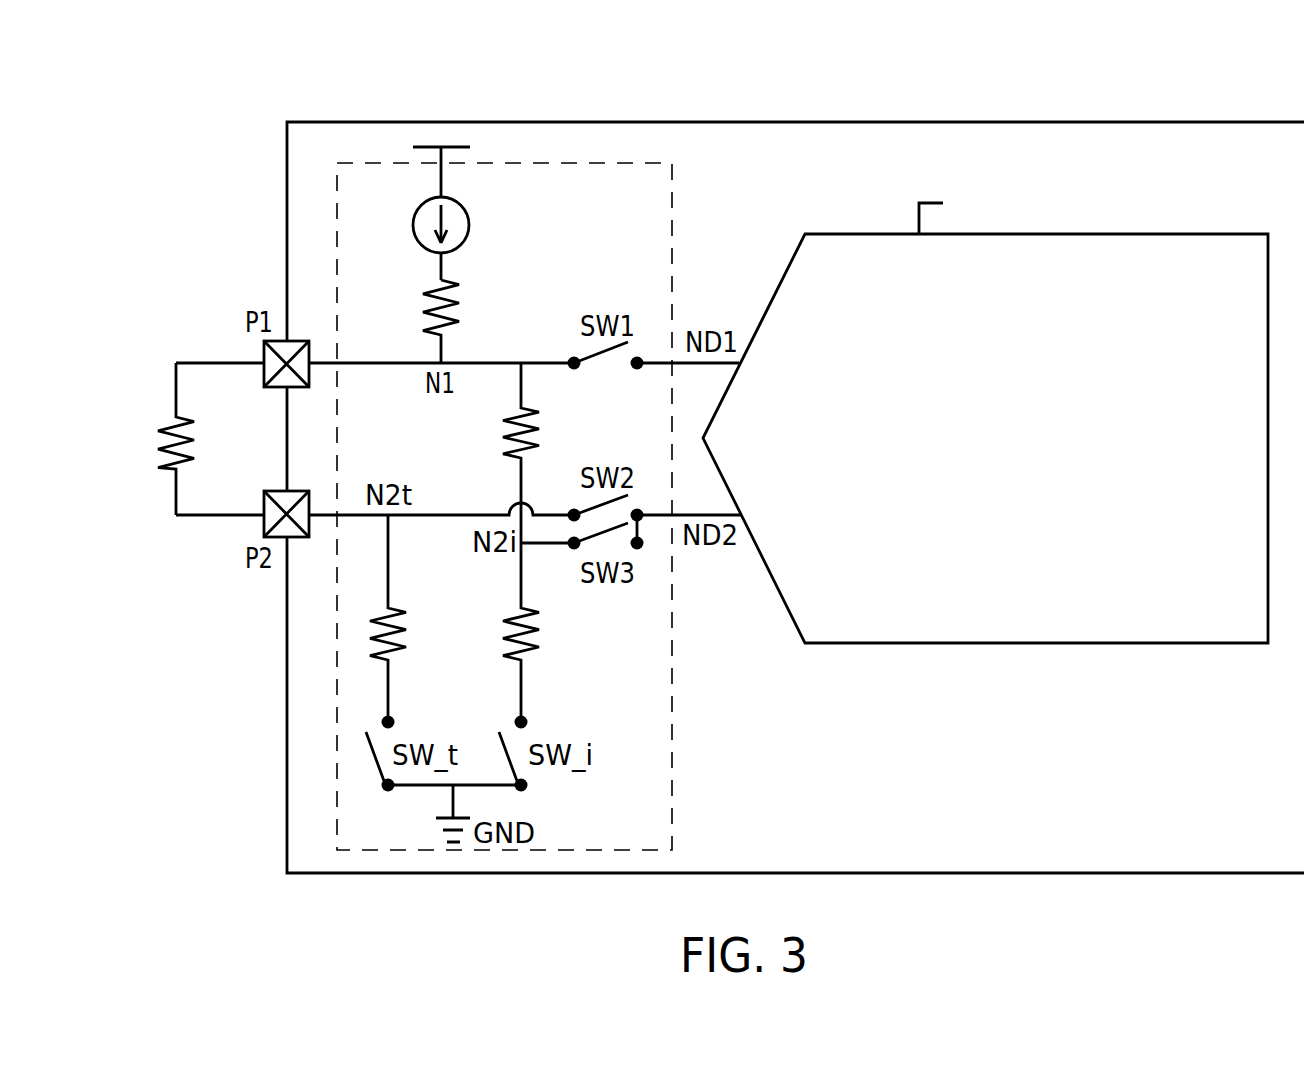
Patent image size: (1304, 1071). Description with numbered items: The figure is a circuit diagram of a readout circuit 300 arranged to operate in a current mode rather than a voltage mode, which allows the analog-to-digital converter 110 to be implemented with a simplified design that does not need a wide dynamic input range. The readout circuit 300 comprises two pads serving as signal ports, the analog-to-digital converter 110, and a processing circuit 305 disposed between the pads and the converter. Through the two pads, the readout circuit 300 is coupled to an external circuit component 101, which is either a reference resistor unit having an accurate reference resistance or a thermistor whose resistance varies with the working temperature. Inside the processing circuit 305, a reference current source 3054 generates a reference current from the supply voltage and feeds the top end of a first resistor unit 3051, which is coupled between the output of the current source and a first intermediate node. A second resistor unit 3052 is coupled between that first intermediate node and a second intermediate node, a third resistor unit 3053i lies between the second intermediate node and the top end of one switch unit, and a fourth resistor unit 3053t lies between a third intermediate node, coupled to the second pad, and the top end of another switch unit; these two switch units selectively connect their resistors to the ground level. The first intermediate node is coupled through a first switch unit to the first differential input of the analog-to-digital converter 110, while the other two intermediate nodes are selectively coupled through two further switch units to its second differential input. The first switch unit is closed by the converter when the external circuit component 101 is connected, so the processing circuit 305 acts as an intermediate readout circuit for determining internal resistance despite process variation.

The readout circuit 300 is at (776, 122).
The processing circuit 305 is at (672, 773).
The ADC 110 is at (1027, 643).
The external circuit component 101 is at (150, 456).
The reference current source 3054 is at (413, 218).
The resistor unit 3051 is at (420, 298).
The resistor unit 3052 is at (500, 440).
The resistor unit 3053t is at (398, 616).
The resistor unit 3053i is at (500, 647).